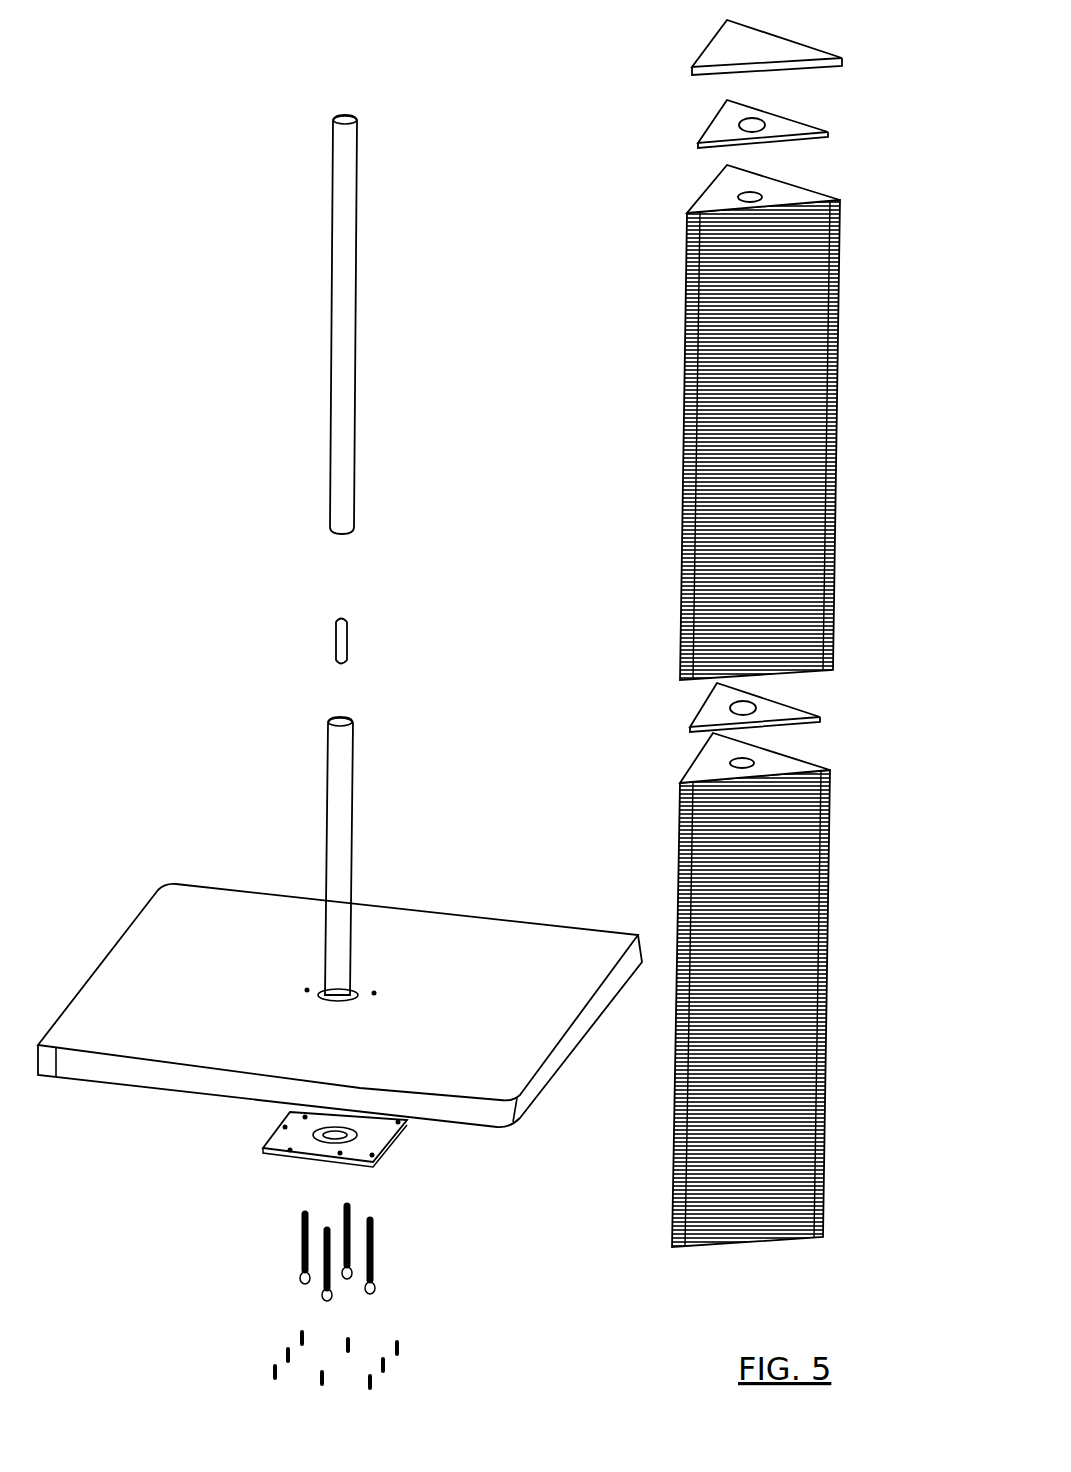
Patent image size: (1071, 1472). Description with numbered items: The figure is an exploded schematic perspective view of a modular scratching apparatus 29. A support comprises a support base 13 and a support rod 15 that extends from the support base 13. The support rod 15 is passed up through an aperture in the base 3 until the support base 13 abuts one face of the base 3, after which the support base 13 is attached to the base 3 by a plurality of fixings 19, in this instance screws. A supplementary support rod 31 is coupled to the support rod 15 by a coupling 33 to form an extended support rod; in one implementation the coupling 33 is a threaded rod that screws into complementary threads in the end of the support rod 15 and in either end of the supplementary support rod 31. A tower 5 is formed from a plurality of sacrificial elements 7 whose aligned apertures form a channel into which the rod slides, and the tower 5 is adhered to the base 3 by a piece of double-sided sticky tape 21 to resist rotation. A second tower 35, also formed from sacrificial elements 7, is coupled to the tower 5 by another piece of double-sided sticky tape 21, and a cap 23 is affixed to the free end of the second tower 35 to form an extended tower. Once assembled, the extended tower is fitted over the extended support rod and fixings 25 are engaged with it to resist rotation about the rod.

The base 3 is at (498, 1078).
The tower 5 is at (703, 765).
The sacrificial element 7 is at (715, 200).
The support base 13 is at (393, 1137).
The support rod 15 is at (342, 803).
The fixings 19 is at (238, 1351).
The double-sided sticky tape 21 is at (718, 128).
The cap 23 is at (772, 52).
The fixings 25 is at (410, 1267).
The modular scratching apparatus 29 is at (214, 430).
The supplementary support rod 31 is at (345, 320).
The coupling 33 is at (347, 648).
The second tower 35 is at (756, 422).